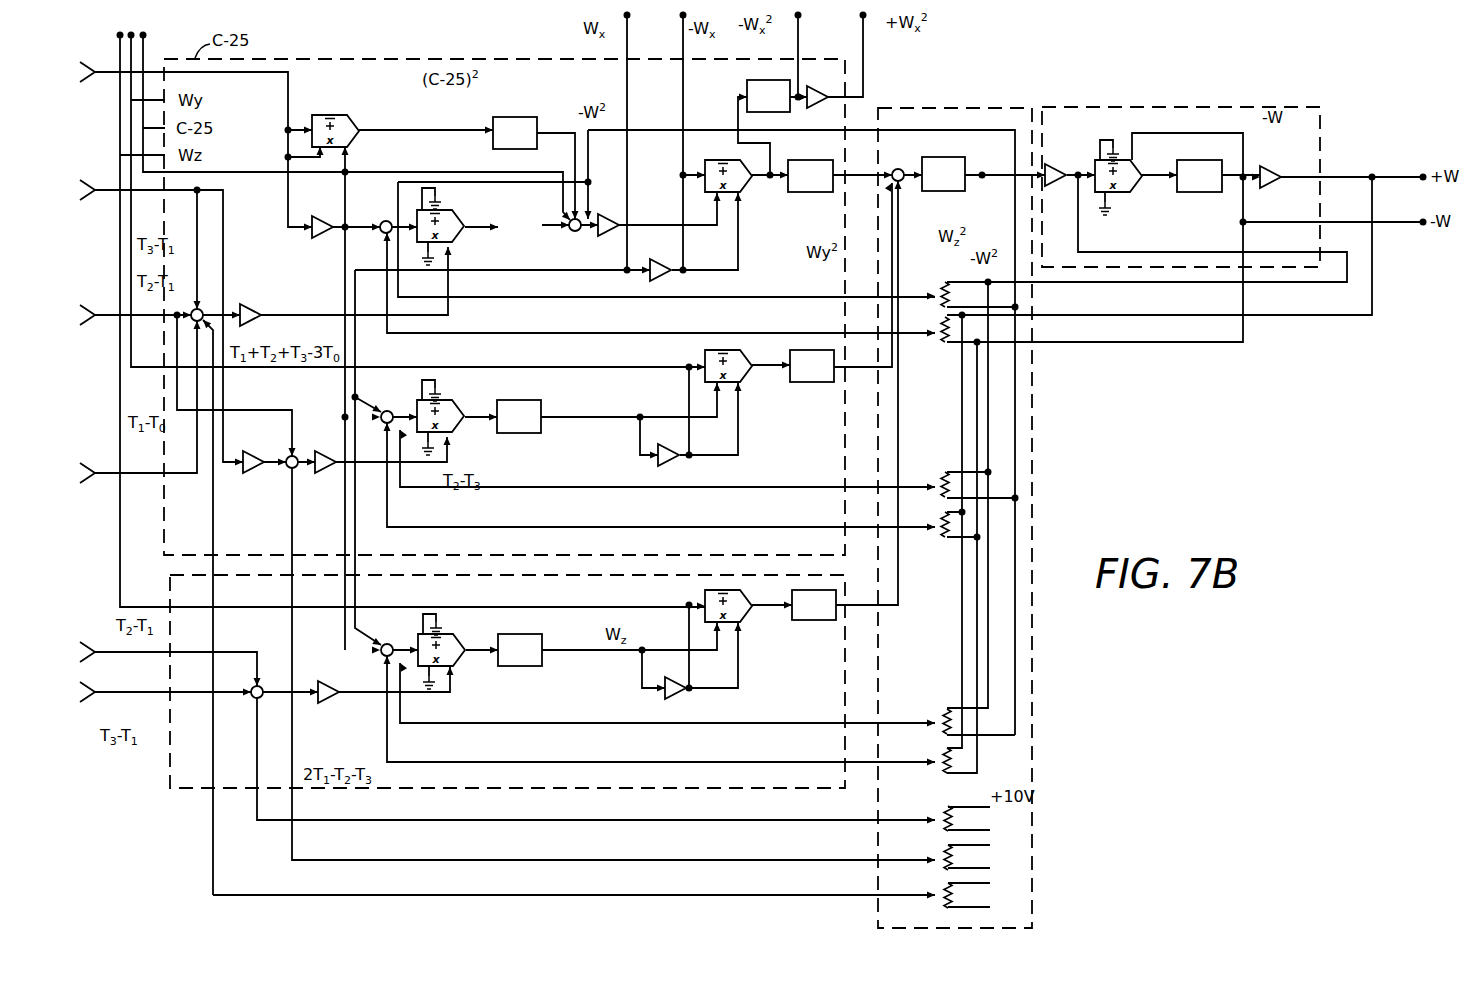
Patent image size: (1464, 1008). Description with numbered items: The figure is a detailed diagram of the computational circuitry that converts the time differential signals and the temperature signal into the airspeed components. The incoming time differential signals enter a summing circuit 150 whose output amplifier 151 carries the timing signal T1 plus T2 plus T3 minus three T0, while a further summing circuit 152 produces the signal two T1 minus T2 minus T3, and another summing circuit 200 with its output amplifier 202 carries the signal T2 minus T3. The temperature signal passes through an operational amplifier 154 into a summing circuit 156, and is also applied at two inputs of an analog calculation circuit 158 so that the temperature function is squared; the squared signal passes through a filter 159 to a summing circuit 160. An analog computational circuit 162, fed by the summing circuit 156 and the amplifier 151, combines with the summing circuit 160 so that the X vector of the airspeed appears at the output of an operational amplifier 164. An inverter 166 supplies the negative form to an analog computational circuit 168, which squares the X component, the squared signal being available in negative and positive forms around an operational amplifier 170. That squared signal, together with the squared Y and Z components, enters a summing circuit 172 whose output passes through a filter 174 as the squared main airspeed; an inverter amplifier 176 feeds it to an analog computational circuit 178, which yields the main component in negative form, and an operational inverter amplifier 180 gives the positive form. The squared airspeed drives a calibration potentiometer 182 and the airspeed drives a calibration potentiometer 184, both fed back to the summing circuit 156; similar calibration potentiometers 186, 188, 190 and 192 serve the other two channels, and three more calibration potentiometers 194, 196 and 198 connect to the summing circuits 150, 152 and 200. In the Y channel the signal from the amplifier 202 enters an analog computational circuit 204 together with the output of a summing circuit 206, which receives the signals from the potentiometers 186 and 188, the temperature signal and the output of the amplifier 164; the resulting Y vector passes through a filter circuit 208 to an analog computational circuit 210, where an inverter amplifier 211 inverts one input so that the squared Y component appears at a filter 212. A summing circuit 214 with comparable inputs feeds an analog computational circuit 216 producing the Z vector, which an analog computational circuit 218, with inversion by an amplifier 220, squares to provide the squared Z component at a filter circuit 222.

The summing circuit 150 is at (205, 308).
The output amplifier 151 is at (262, 300).
The summing circuit 152 is at (263, 686).
The operational amplifier 154 is at (322, 240).
The summing circuit 156 is at (384, 220).
The analog calculation circuit 158 is at (356, 117).
The filter 159 is at (527, 117).
The summing circuit 160 is at (571, 233).
The analog computational circuit 162 is at (462, 213).
The operational amplifier 164 is at (608, 238).
The inverter 166 is at (672, 280).
The analog computational circuit 168 is at (745, 193).
The operational amplifier 170 is at (835, 90).
The summing circuit 172 is at (901, 168).
The filter 174 is at (945, 157).
The inverter amplifier 176 is at (1068, 165).
The analog computational circuit 178 is at (1130, 195).
The operational inverter amplifier 180 is at (1270, 168).
The calibration potentiometer 182 is at (942, 303).
The calibration potentiometer 184 is at (940, 346).
The calibration potentiometer 186 is at (943, 475).
The calibration potentiometer 188 is at (940, 540).
The calibration potentiometer 190 is at (943, 715).
The calibration potentiometer 192 is at (943, 758).
The calibration potentiometer 194 is at (945, 815).
The calibration potentiometer 196 is at (945, 853).
The calibration potentiometer 198 is at (945, 890).
The summing circuit 200 is at (285, 470).
The output amplifier 202 is at (323, 473).
The analog computational circuit 204 is at (456, 400).
The summing circuit 206 is at (400, 390).
The filter circuit 208 is at (550, 400).
The analog computational circuit 210 is at (704, 355).
The inverter amplifier 211 is at (680, 463).
The filter 212 is at (810, 383).
The summing circuit 214 is at (380, 656).
The analog computational circuit 216 is at (468, 641).
The analog computational circuit 218 is at (704, 594).
The amplifier 220 is at (676, 698).
The filter circuit 222 is at (815, 621).